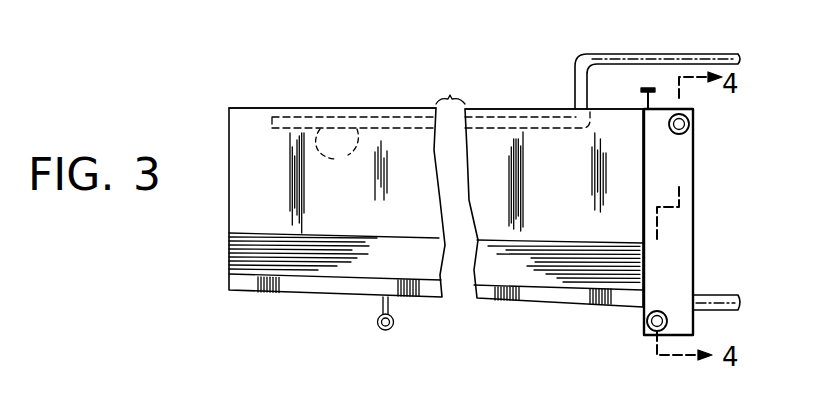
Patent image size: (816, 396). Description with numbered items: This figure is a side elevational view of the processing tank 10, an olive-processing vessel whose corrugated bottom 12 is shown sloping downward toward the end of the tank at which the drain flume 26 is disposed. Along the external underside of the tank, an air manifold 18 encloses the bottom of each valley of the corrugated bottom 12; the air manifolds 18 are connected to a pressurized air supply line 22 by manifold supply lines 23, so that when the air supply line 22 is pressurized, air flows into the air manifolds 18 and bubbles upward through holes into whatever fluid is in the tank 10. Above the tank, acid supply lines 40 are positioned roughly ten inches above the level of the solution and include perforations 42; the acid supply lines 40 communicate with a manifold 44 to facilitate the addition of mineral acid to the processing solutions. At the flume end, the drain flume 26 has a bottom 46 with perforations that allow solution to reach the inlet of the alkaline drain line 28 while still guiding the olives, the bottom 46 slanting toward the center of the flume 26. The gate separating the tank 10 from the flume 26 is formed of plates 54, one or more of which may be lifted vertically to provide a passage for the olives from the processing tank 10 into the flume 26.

The processing tank 10 is at (487, 100).
The bottom 12 is at (557, 302).
The air manifold 18 is at (308, 297).
The pressurized air supply line 22 is at (383, 332).
The manifold supply line 23 is at (392, 302).
The drain flume 26 is at (688, 230).
The alkaline drain line 28 is at (647, 322).
The acid supply line 40 is at (272, 117).
The perforations 42 is at (336, 148).
The manifold 44 is at (690, 55).
The bottom 46 is at (690, 124).
The plate 54 is at (648, 88).